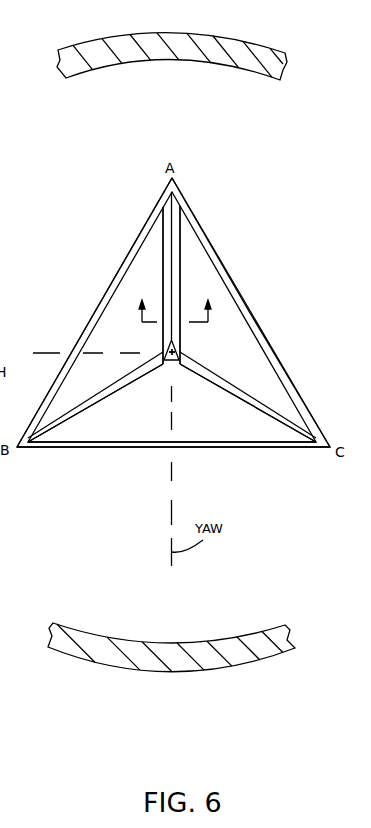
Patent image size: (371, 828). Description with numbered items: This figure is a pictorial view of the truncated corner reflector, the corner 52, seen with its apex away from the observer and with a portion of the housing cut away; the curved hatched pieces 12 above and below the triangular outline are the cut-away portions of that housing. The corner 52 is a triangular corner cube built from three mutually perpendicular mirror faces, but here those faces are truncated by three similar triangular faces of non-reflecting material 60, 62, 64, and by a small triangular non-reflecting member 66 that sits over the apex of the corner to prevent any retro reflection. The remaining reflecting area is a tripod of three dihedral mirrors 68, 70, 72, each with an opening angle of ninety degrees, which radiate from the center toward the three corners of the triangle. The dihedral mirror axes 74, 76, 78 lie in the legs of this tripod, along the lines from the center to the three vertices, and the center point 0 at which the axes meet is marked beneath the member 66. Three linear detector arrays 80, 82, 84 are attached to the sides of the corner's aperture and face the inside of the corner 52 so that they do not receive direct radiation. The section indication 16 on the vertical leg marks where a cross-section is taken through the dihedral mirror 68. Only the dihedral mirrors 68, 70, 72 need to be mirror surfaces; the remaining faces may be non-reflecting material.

The flange 12 is at (232, 41).
The corner 52 is at (247, 291).
The triangular face of non-reflecting material 62 is at (147, 246).
The linear detector array 84 is at (102, 302).
The triangular face of non-reflecting material 60 is at (230, 313).
The linear detector array 82 is at (272, 345).
The linear detector array 80 is at (252, 448).
The triangular face of non-reflecting material 64 is at (200, 427).
The dihedral mirror 68 is at (175, 256).
The dihedral mirror axis 74 is at (172, 225).
The small triangular non-reflecting member 66 is at (175, 367).
The center point 0 is at (174, 352).
The dihedral mirror 72 is at (270, 403).
The dihedral mirror axis 78 is at (298, 430).
The dihedral mirror axis 76 is at (105, 395).
The dihedral mirror 70 is at (62, 424).
The section line 16 is at (178, 301).